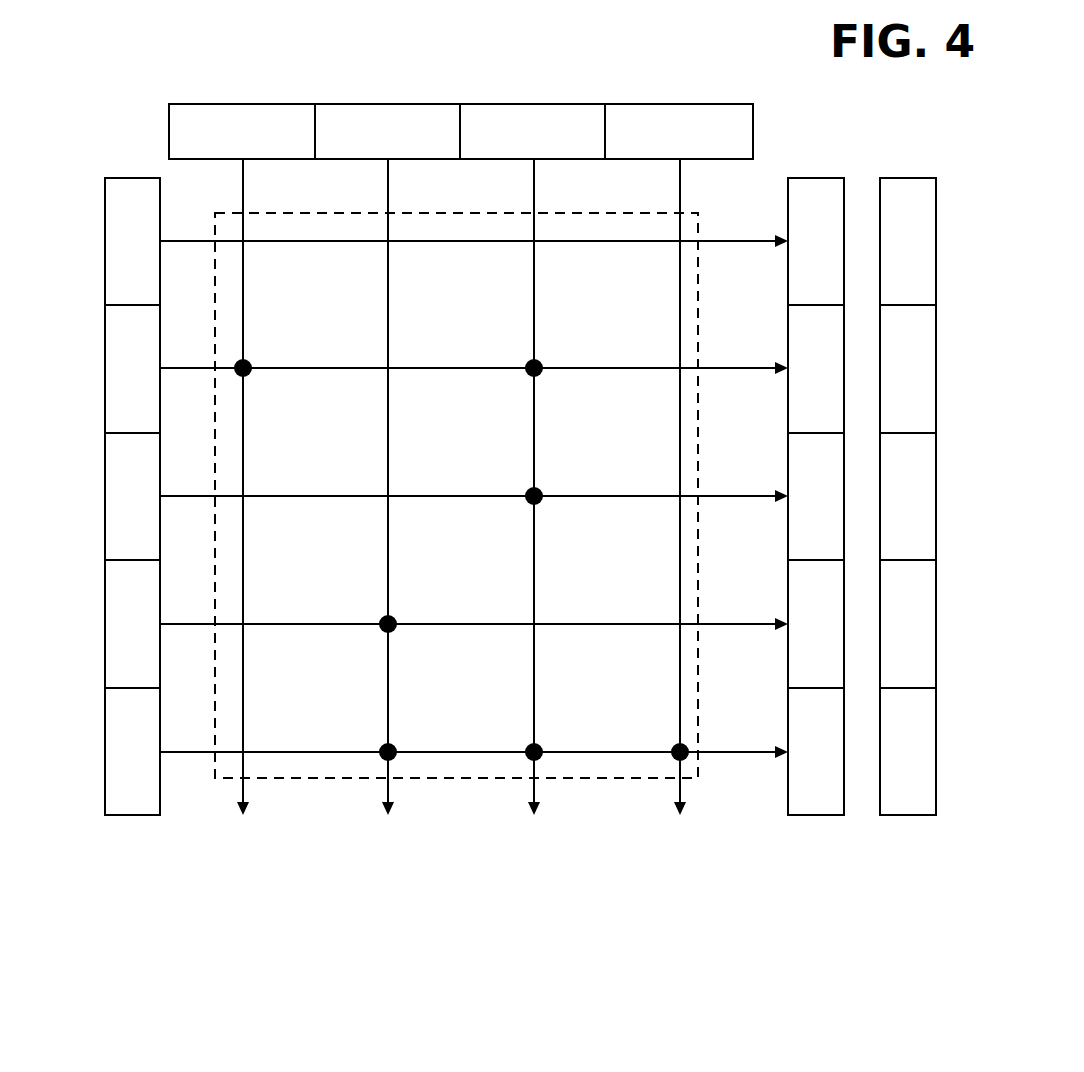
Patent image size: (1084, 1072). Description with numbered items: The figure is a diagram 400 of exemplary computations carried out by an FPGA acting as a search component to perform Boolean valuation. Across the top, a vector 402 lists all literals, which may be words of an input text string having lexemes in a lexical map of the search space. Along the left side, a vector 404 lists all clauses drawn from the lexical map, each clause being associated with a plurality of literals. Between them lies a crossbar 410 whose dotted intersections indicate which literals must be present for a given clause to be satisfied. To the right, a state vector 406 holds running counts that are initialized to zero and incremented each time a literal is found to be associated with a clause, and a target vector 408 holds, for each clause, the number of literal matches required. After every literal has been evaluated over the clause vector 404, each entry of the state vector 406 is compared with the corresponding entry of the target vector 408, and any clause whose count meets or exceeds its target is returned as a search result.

The diagram 400 is at (345, 1022).
The vector listing all literals 402 is at (350, 104).
The vector listing all clauses 404 is at (133, 178).
The state vector 406 is at (815, 815).
The target vector 408 is at (906, 178).
The crossbar 410 is at (460, 778).